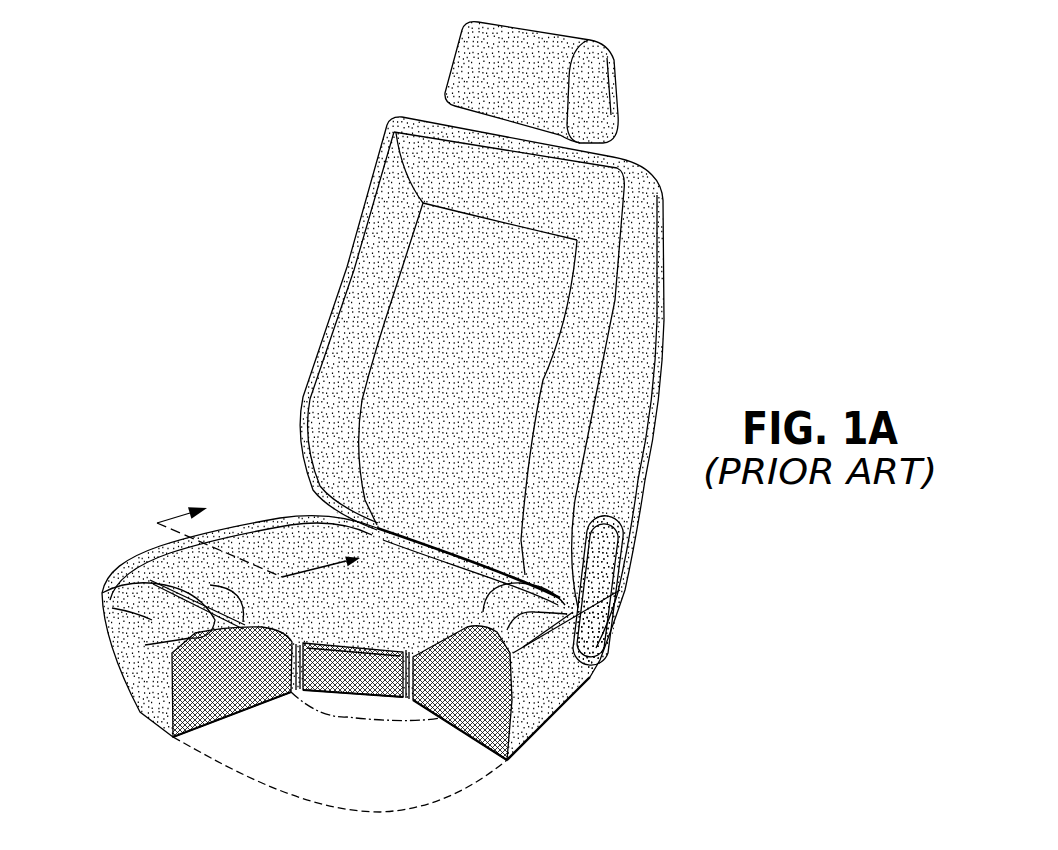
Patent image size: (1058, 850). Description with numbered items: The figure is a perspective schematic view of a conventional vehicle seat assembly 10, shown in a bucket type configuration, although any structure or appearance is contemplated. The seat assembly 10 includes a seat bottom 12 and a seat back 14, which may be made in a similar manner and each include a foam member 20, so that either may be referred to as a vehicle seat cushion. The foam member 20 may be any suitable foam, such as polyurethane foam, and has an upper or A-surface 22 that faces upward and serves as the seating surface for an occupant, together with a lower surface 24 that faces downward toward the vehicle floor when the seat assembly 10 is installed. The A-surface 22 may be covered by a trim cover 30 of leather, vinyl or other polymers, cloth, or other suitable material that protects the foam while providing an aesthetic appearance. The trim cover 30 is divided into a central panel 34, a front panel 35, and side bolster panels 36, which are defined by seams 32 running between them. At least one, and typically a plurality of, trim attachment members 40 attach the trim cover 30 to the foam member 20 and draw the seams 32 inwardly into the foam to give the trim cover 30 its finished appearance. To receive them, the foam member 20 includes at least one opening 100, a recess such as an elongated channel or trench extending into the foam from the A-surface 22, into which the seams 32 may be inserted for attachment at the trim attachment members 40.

The vehicle seat assembly 10 is at (702, 86).
The seat bottom 12 is at (540, 683).
The seat back 14 is at (668, 370).
The foam member 20 is at (217, 710).
The A-surface 22 is at (215, 630).
The lower surface 24 is at (245, 708).
The trim cover 30 is at (190, 637).
The seams 32 is at (232, 626).
The central panel 34 is at (453, 593).
The front panel 35 is at (153, 613).
The side bolster panels 36 is at (137, 560).
The trim attachment members 40 is at (353, 645).
The opening 100 is at (378, 694).